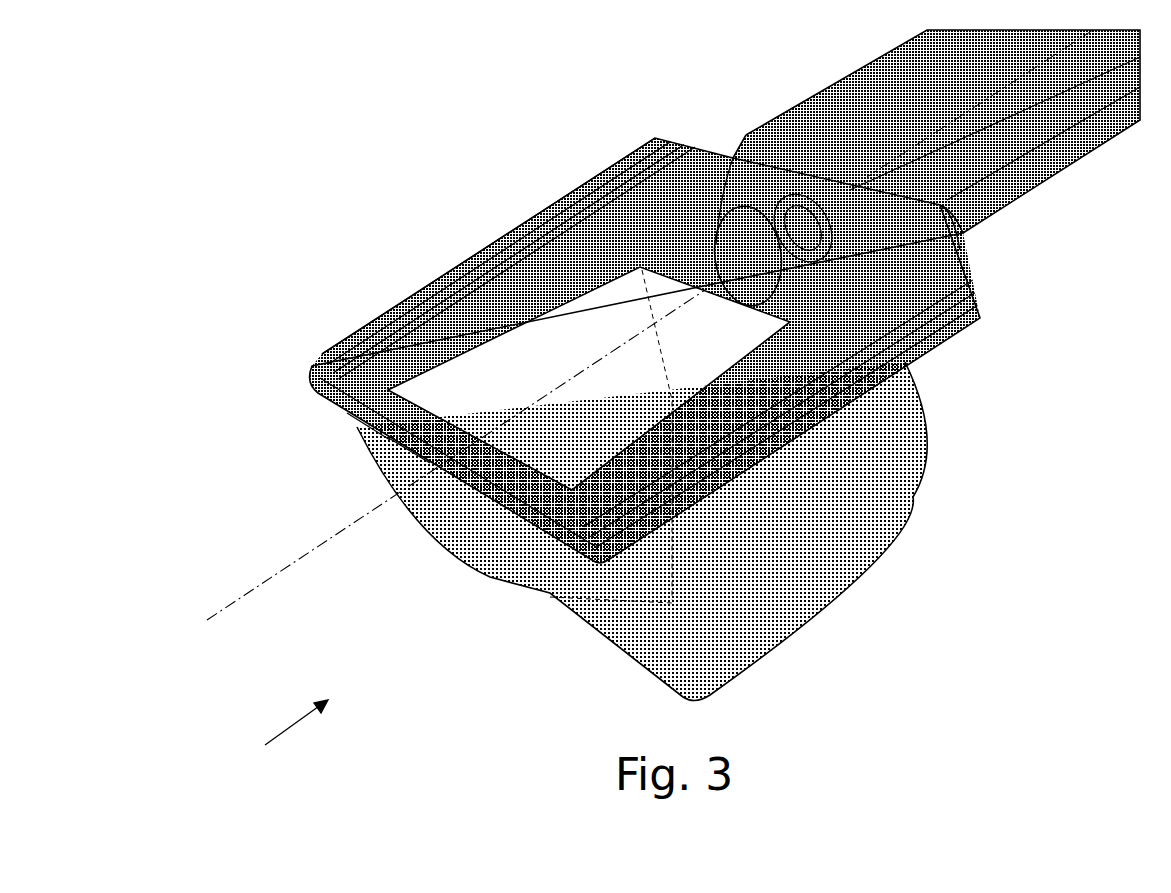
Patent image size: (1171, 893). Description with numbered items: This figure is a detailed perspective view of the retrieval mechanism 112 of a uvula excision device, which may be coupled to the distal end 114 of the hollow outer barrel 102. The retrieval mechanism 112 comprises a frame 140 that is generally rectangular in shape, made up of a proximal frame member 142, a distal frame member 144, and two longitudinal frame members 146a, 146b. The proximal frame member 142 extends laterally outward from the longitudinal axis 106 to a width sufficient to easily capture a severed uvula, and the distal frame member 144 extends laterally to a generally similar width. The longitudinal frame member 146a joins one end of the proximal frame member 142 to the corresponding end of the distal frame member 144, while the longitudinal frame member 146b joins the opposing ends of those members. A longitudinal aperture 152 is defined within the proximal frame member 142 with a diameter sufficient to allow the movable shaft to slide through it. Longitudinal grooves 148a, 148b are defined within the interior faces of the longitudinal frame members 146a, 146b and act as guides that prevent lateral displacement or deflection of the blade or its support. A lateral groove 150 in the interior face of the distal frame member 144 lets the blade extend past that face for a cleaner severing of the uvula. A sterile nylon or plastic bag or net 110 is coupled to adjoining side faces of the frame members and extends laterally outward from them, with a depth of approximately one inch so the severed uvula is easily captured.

The outer barrel 102 is at (1033, 177).
The longitudinal axis 106 is at (227, 608).
The net 110 is at (862, 543).
The retrieval mechanism 112 is at (278, 729).
The distal end 114 is at (747, 135).
The frame 140 is at (996, 322).
The proximal frame member 142 is at (650, 155).
The distal frame member 144 is at (387, 437).
The longitudinal frame member 146a is at (485, 253).
The longitudinal frame member 146b is at (857, 377).
The longitudinal groove 148a is at (417, 295).
The longitudinal groove 148b is at (760, 413).
The lateral groove 150 is at (347, 413).
The longitudinal aperture 152 is at (563, 192).